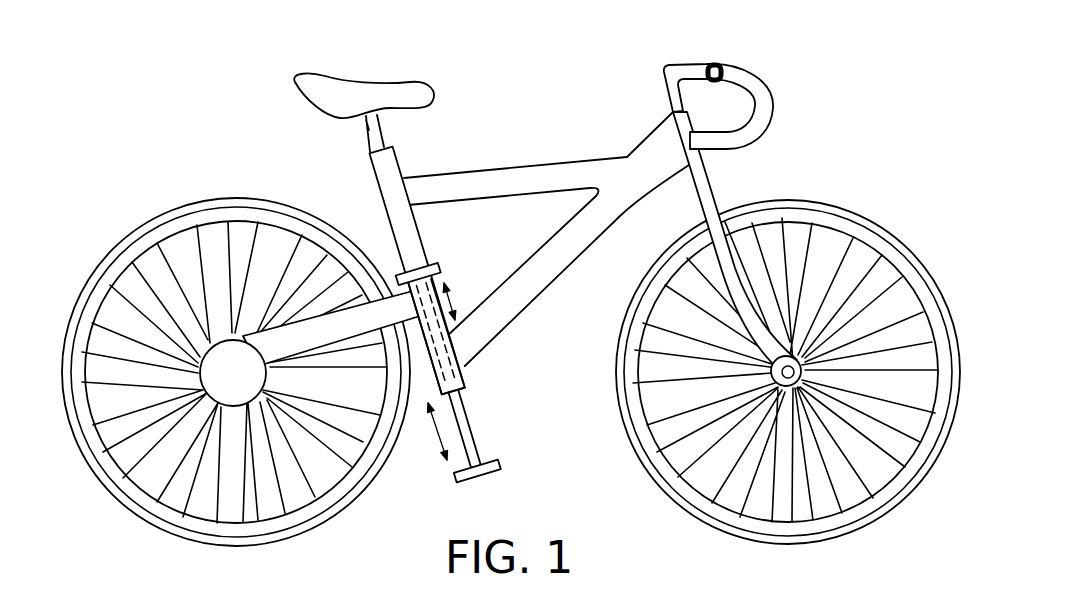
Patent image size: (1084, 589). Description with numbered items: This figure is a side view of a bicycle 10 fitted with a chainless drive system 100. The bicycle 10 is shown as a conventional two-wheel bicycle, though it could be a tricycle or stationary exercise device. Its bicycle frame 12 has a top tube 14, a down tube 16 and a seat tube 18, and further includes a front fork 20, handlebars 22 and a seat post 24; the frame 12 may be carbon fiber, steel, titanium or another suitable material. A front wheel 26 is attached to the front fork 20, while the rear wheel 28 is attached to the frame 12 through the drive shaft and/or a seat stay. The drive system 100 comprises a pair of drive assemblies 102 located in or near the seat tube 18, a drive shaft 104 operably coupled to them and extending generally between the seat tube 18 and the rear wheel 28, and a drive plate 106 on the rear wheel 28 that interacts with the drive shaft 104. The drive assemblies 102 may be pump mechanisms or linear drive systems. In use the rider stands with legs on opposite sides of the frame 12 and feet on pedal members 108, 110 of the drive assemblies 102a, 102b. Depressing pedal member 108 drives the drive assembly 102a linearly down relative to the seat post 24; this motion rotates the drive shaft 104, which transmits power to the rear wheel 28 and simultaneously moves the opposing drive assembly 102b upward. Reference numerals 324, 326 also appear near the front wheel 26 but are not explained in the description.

The bicycle 10 is at (215, 118).
The bicycle frame 12 is at (735, 157).
The top tube 14 is at (507, 177).
The down tube 16 is at (572, 240).
The seat tube 18 is at (375, 193).
The front fork 20 is at (713, 200).
The handlebars 22 is at (748, 75).
The seat post 24 is at (365, 118).
The front wheel 26 is at (893, 220).
The rear wheel 28 is at (134, 216).
The drive system 100 is at (220, 379).
The drive assemblies 102 is at (456, 273).
The drive assembly 102a is at (462, 425).
The drive assembly 102b is at (430, 332).
The drive shaft 104 is at (287, 343).
The drive plate 106 is at (214, 372).
The pedal member 108 is at (485, 470).
The pedal member 110 is at (440, 260).
The front wheel element 324 is at (667, 575).
The front wheel element 326 is at (819, 576).